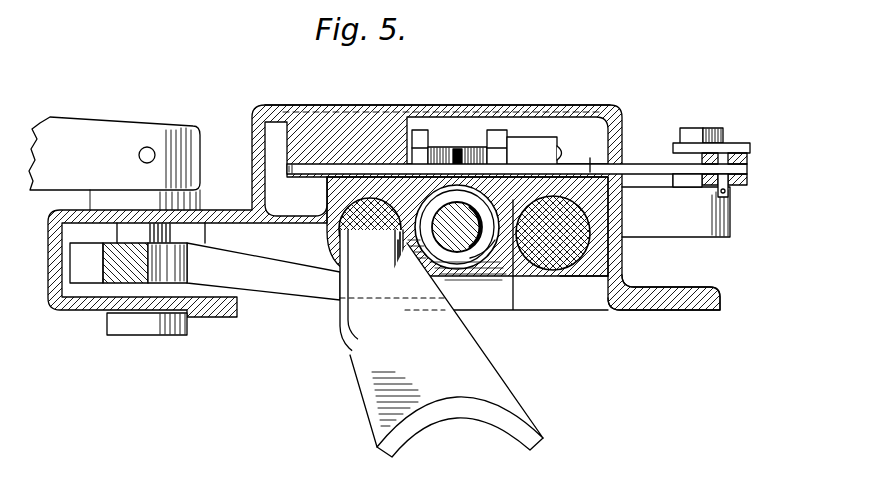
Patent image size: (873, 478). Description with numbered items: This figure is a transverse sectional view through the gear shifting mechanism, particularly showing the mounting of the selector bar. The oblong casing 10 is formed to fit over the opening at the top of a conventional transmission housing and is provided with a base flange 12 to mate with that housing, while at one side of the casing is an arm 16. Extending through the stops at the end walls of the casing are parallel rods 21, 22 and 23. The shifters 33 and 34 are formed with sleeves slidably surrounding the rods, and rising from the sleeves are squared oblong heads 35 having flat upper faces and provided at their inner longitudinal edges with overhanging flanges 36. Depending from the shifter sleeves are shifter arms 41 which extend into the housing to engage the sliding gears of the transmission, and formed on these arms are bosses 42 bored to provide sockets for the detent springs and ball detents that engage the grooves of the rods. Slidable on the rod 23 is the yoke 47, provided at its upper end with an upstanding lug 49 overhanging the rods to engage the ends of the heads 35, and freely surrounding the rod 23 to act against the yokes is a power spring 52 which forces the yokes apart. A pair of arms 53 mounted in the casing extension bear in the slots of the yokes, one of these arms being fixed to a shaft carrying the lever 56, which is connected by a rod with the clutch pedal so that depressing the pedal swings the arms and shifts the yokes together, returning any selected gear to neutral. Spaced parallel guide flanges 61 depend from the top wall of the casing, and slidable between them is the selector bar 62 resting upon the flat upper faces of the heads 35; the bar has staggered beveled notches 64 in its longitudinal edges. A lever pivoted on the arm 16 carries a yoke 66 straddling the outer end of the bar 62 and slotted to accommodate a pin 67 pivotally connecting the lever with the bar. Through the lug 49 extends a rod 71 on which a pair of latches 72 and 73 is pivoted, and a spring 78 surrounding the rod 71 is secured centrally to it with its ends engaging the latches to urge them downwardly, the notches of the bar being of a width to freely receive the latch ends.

The casing 10 is at (513, 106).
The base flange 12 is at (710, 312).
The arm 16 is at (676, 205).
The rod 21 is at (552, 263).
The rod 22 is at (330, 262).
The rod 23 is at (460, 246).
The shifter 33 is at (578, 268).
The shifter 34 is at (323, 230).
The head 35 is at (340, 183).
The overhanging flange 36 is at (487, 183).
The shifter arm 41 is at (446, 350).
The boss 42 is at (371, 294).
The yoke 47 is at (500, 287).
The lug 49 is at (537, 140).
The power spring 52 is at (498, 256).
The arm 53 is at (205, 279).
The lever 56 is at (77, 133).
The guide flange 61 is at (349, 106).
The selector bar 62 is at (643, 165).
The notch 64 is at (451, 158).
The yoke 66 is at (748, 158).
The pin 67 is at (740, 143).
The rod 71 is at (562, 150).
The latch 72 is at (497, 132).
The latch 73 is at (420, 132).
The spring 78 is at (475, 147).